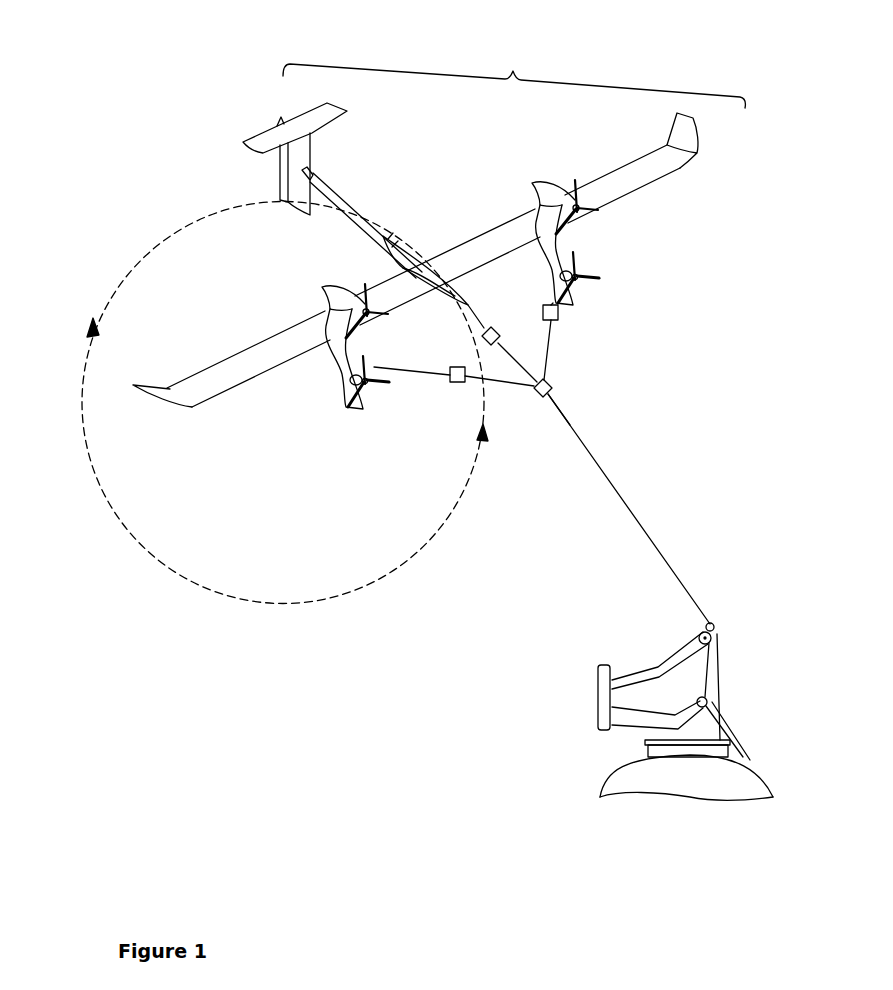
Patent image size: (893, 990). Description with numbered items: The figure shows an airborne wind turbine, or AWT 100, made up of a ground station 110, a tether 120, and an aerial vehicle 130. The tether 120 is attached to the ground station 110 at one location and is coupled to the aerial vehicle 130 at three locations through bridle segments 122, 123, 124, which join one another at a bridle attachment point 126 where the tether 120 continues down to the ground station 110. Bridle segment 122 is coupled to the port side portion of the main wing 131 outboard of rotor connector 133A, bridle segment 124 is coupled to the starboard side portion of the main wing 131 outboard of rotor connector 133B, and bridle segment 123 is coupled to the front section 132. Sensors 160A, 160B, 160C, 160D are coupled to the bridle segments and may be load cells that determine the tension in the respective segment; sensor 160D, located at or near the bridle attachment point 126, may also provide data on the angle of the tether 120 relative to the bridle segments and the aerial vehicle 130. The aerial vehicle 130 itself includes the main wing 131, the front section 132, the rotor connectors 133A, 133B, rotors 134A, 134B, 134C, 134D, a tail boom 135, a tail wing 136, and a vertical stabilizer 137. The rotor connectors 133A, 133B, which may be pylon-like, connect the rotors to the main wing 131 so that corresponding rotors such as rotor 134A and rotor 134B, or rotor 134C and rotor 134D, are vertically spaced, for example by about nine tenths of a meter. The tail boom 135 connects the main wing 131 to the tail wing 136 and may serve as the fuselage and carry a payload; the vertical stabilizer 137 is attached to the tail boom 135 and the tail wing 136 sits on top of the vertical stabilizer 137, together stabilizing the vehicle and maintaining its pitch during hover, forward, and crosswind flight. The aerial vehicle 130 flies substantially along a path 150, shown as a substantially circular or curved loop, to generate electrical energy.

The airborne wind turbine (AWT) 100 is at (174, 57).
The ground station 110 is at (598, 688).
The tether 120 is at (652, 540).
The bridle segment 122 is at (552, 348).
The bridle segment 123 is at (518, 360).
The bridle segment 124 is at (517, 388).
The bridle attachment point 126 is at (547, 398).
The aerial vehicle 130 is at (514, 77).
The main wing 131 is at (463, 243).
The front section 132 is at (453, 290).
The rotor connector 133A is at (542, 200).
The rotor connector 133B is at (330, 308).
The rotor 134A is at (580, 213).
The rotor 134B is at (597, 280).
The rotor 134C is at (373, 317).
The rotor 134D is at (375, 387).
The tail boom 135 is at (362, 205).
The tail wing 136 is at (340, 106).
The vertical stabilizer 137 is at (298, 212).
The path 150 is at (128, 268).
The sensor 160A is at (560, 312).
The sensor 160B is at (500, 327).
The sensor 160C is at (457, 383).
The sensor 160D is at (553, 388).